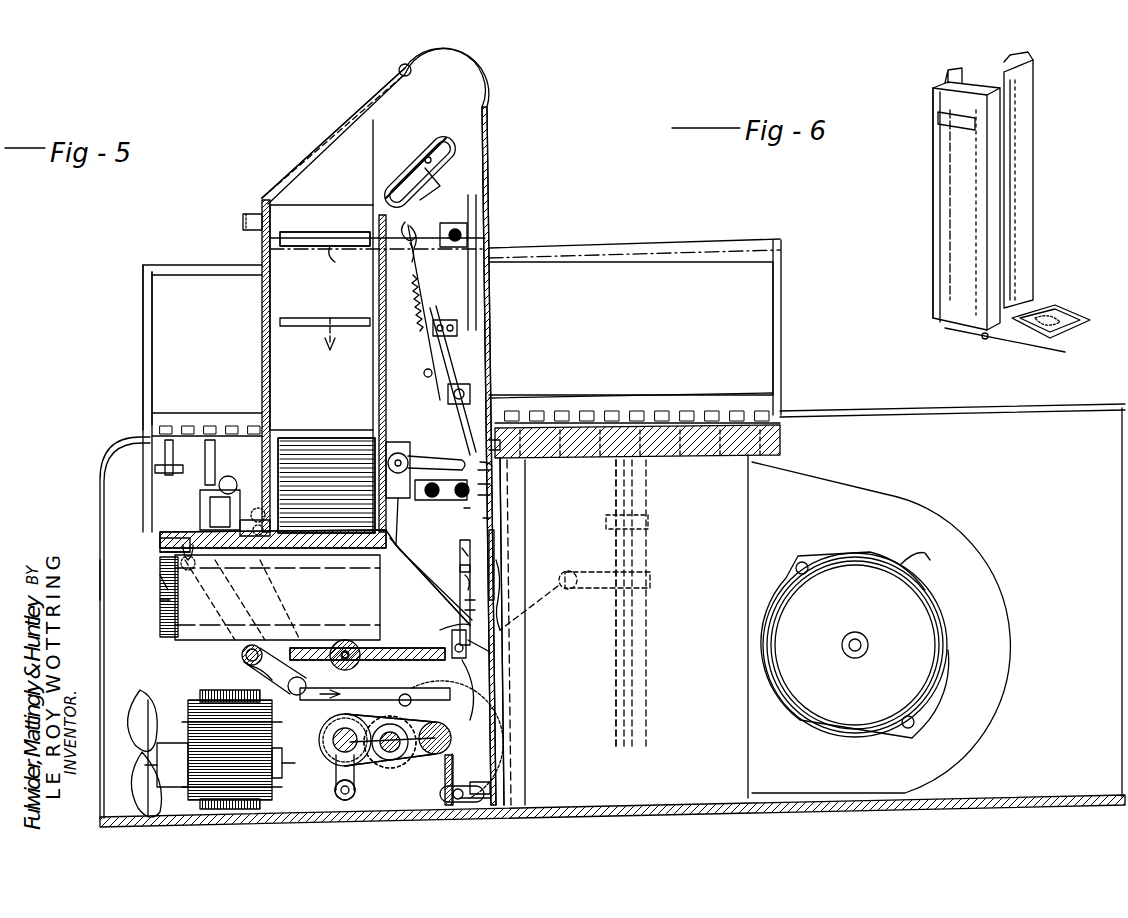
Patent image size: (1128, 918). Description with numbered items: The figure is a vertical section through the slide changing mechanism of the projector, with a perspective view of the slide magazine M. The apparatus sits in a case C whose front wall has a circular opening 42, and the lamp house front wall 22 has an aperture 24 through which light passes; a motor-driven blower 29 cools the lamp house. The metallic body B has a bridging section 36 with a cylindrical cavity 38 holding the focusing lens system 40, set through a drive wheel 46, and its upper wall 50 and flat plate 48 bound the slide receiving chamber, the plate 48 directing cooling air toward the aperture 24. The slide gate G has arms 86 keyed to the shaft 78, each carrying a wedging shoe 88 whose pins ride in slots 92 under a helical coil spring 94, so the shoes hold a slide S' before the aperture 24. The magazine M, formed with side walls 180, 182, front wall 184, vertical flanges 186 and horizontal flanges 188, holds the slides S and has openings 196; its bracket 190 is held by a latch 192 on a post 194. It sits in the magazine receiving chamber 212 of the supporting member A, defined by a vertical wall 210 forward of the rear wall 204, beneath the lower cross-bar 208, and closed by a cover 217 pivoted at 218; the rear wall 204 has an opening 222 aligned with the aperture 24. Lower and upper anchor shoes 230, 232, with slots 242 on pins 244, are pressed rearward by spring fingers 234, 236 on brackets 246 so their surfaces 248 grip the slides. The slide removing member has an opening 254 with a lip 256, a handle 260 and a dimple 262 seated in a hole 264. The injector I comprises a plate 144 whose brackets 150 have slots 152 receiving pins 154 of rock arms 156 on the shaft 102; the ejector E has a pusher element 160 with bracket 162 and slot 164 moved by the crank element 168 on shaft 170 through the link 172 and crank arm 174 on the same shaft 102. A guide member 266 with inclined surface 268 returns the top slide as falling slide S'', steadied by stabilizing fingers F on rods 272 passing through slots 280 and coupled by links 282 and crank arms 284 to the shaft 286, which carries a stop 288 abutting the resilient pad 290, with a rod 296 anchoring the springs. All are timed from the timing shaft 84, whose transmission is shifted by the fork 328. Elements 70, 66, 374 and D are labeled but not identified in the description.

In FIG. 5, the rear wall 204 is at (489, 127).
In FIG. 5, the magazine supporting member A is at (496, 162).
In FIG. 5, the pivot connection 218 is at (400, 68).
In FIG. 5, the cover 217 is at (336, 146).
In FIG. 5, the guide member 266 is at (456, 138).
In FIG. 5, the inclined front surface 268 is at (422, 148).
In FIG. 5, the upper anchor shoes 232 is at (477, 208).
In FIG. 5, the slots 280 is at (416, 230).
In FIG. 5, the rearwardly facing surfaces 248 is at (470, 234).
In FIG. 5, the stabilizing fingers F is at (356, 236).
In FIG. 5, the vertical wall 210 is at (243, 222).
In FIG. 5, the magazine M is at (272, 275).
In FIG. 6, the magazine M is at (945, 189).
In FIG. 5, the rectangular openings 196 is at (338, 250).
In FIG. 6, the rectangular openings 196 is at (938, 120).
In FIG. 5, the horizontal rods 272 is at (412, 248).
In FIG. 5, the falling slide S'' is at (332, 320).
In FIG. 5, the brackets 246 is at (440, 318).
In FIG. 5, the magazine receiving chamber 212 is at (266, 336).
In FIG. 5, the second pair of spring fingers 236 is at (472, 356).
In FIG. 5, the opening 254 is at (424, 326).
In FIG. 5, the horizontal rod 296 is at (424, 375).
In FIG. 5, the front wall 184 is at (266, 378).
In FIG. 6, the front wall 184 is at (952, 85).
In FIG. 5, the first pair of spring fingers 234 is at (470, 394).
In FIG. 5, the side wall 182 is at (332, 385).
In FIG. 6, the side wall 182 is at (1018, 137).
In FIG. 5, the horizontal shaft 286 is at (398, 413).
In FIG. 5, the links 282 is at (432, 413).
In FIG. 5, the slides S is at (472, 582).
In FIG. 5, the bracket 190 is at (262, 486).
In FIG. 5, the crank arms 284 is at (420, 460).
In FIG. 5, the handle 260 is at (498, 446).
In FIG. 5, the hole 264 is at (493, 472).
In FIG. 5, the dimple 262 is at (487, 485).
In FIG. 5, the lower anchor shoes 230 is at (488, 495).
In FIG. 5, the opening 222 is at (486, 518).
In FIG. 5, the aperture 24 is at (494, 532).
In FIG. 5, the exhibited slide S' is at (522, 595).
In FIG. 5, the hold-down latch 192 is at (256, 495).
In FIG. 5, the post 194 is at (236, 516).
In FIG. 5, the lower cross-bar 208 is at (265, 517).
In FIG. 5, the pins 244 is at (434, 494).
In FIG. 5, the horizontal slots 242 is at (460, 498).
In FIG. 5, the stop 288 is at (404, 500).
In FIG. 5, the slide gate G is at (462, 552).
In FIG. 5, the wedging shoe 88 is at (465, 548).
In FIG. 5, the pad of resilient material 290 is at (428, 560).
In FIG. 5, the focusing lens system 40 is at (270, 597).
In FIG. 5, the upper wall 50 is at (340, 550).
In FIG. 5, the member 70 is at (462, 567).
In FIG. 5, the slide receiving chamber 46 is at (332, 668).
In FIG. 5, the arms 86 is at (462, 578).
In FIG. 5, the helical coil spring 94 is at (468, 602).
In FIG. 5, the slots 92 is at (468, 610).
In FIG. 5, the flat plate 48 is at (468, 622).
In FIG. 5, the injector I is at (162, 544).
In FIG. 5, the brackets 150 is at (160, 550).
In FIG. 5, the circular opening 42 is at (100, 570).
In FIG. 5, the pin 154 is at (162, 580).
In FIG. 5, the rock arms 156 is at (162, 598).
In FIG. 5, the vertical slot 152 is at (256, 565).
In FIG. 5, the injector plate 144 is at (254, 534).
In FIG. 5, the horizontal shaft 102 is at (242, 661).
In FIG. 5, the crank arm 174 is at (270, 684).
In FIG. 5, the cylindrical cavity 38 is at (262, 654).
In FIG. 5, the metallic body B is at (393, 782).
In FIG. 5, the ejector E is at (344, 660).
In FIG. 5, the case C is at (345, 712).
In FIG. 5, the body section 36 is at (367, 660).
In FIG. 5, the link 172 is at (420, 692).
In FIG. 5, the horizontal shaft 78 is at (453, 649).
In FIG. 5, the lip 256 is at (470, 666).
In FIG. 5, the front wall 22 is at (500, 654).
In FIG. 5, the timing shaft 84 is at (456, 736).
In FIG. 5, the pusher element 160 is at (472, 776).
In FIG. 5, the link 66 is at (473, 781).
In FIG. 5, the bracket 162 is at (482, 786).
In FIG. 5, the horizontal slot 164 is at (472, 796).
In FIG. 5, the crank element 168 is at (456, 768).
In FIG. 5, the shifting fork 328 is at (334, 790).
In FIG. 5, the hub 374 is at (382, 752).
In FIG. 5, the gear D is at (351, 797).
In FIG. 5, the horizontal shaft 170 is at (392, 765).
In FIG. 5, the blower 29 is at (855, 645).
In FIG. 6, the side wall 180 is at (950, 225).
In FIG. 6, the vertical flanges 186 is at (1000, 255).
In FIG. 6, the horizontal flanges 188 is at (1042, 300).